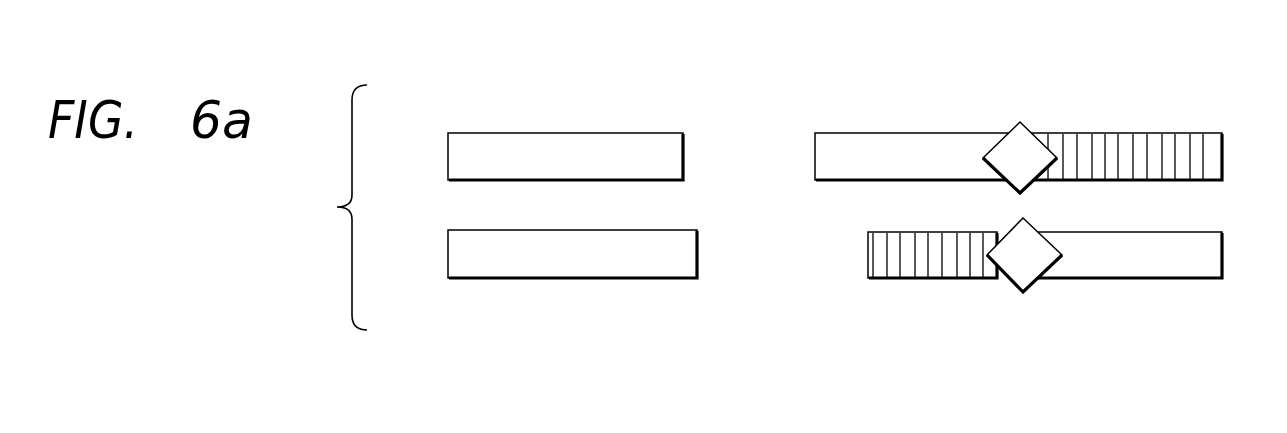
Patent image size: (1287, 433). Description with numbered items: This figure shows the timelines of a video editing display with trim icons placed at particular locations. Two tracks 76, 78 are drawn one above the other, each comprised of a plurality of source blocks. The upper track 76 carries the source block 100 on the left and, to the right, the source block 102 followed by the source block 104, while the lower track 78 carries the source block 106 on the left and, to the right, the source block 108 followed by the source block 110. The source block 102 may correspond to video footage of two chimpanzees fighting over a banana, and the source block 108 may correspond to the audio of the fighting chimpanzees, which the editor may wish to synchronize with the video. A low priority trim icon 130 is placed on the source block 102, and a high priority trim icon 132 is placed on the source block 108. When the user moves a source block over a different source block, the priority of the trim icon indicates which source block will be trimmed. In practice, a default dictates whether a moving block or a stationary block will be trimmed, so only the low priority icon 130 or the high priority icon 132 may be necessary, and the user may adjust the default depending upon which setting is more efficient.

The track 76 is at (448, 157).
The track 78 is at (448, 253).
The source block 100 is at (565, 132).
The source block 102 is at (900, 132).
The source block 104 is at (1118, 132).
The source block 106 is at (563, 280).
The source block 108 is at (935, 280).
The source block 110 is at (1120, 280).
The low priority trim icon 130 is at (1030, 130).
The high priority trim icon 132 is at (1033, 282).